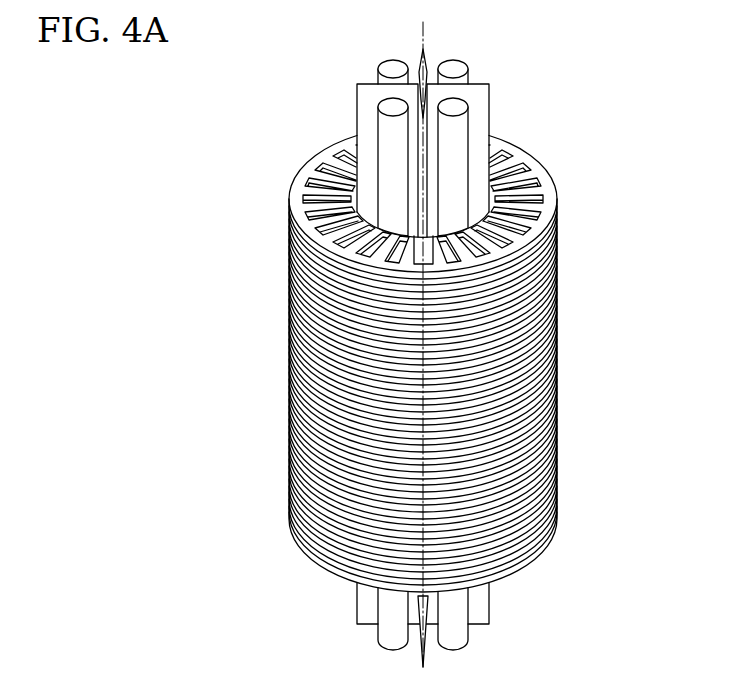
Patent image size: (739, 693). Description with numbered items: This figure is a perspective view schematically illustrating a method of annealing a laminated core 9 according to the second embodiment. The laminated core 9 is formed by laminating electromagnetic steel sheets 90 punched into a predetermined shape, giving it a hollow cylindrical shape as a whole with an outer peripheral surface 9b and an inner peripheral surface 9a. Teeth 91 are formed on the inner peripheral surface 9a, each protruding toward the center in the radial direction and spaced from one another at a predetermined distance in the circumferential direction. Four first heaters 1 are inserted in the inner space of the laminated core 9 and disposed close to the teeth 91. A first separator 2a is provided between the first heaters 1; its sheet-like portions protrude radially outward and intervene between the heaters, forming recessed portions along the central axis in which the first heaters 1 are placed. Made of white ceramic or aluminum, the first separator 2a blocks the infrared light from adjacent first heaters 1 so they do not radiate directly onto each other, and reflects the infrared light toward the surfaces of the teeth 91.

The first heater 1 is at (377, 77).
The first separator 2a is at (488, 100).
The laminated core 9 is at (416, 345).
The inner peripheral surface of laminated core 9a is at (528, 150).
The outer peripheral surface of laminated core 9b is at (558, 183).
The electromagnetic steel sheet 90 is at (552, 260).
The tooth 91 is at (337, 165).